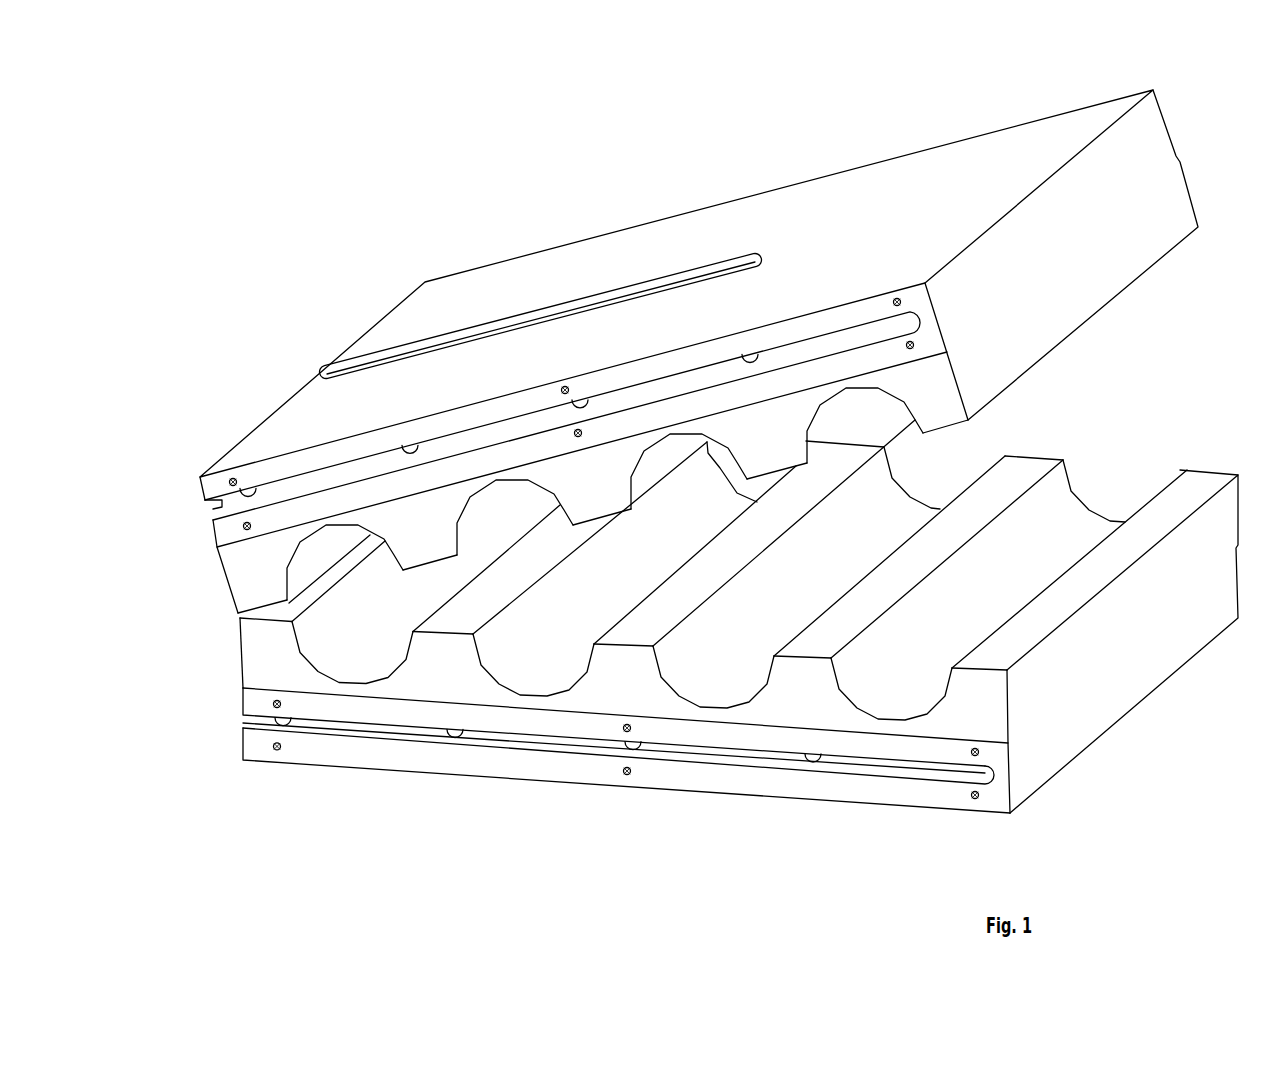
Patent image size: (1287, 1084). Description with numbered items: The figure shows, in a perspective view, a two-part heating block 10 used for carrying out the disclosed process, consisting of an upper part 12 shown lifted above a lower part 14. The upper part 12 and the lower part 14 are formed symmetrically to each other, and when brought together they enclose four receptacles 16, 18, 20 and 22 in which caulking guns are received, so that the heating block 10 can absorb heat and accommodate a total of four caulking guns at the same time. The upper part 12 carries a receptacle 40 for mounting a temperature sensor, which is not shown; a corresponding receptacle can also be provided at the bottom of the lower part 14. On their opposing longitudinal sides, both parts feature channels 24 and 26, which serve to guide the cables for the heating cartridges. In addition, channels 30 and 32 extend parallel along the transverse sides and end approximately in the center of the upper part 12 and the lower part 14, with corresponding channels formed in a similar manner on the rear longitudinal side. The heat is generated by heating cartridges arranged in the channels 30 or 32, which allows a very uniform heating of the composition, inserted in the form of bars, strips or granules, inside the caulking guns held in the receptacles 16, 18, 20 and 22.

The two-part heating block 10 is at (322, 147).
The upper part 12 is at (851, 188).
The lower part 14 is at (1130, 686).
The receptacle 16 is at (370, 657).
The receptacle 18 is at (530, 676).
The receptacle 20 is at (722, 690).
The receptacle 22 is at (912, 708).
The channel 24 is at (222, 507).
The channel 26 is at (253, 721).
The transverse channel 30 is at (252, 496).
The transverse channel 32 is at (286, 722).
The receptacle for a temperature sensor 40 is at (343, 366).